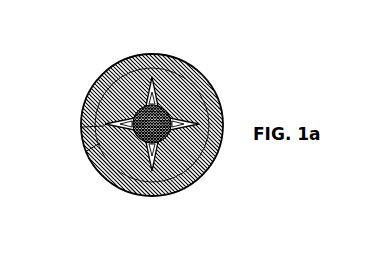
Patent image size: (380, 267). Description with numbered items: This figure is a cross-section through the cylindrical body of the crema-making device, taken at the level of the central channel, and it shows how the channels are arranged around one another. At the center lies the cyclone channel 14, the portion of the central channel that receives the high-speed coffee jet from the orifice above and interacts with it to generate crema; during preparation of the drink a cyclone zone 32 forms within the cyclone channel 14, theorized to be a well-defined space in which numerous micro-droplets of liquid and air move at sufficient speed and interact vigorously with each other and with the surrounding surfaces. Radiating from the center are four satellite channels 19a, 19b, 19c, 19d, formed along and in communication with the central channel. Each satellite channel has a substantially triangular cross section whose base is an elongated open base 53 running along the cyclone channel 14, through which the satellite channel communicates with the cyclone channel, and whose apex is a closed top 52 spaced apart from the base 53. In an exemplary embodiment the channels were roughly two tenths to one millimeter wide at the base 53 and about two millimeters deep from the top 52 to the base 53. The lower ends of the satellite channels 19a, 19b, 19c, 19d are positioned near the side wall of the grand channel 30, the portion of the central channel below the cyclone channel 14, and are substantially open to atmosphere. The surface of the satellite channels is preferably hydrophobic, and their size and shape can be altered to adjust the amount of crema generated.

The cyclone channel 14 is at (163, 100).
The satellite channel 19a is at (197, 113).
The satellite channel 19b is at (108, 108).
The satellite channel 19c is at (141, 56).
The satellite channel 19d is at (125, 172).
The grand channel 30 is at (210, 168).
The cyclone zone 32 is at (176, 192).
The closed top 52 is at (82, 127).
The open base 53 is at (85, 152).